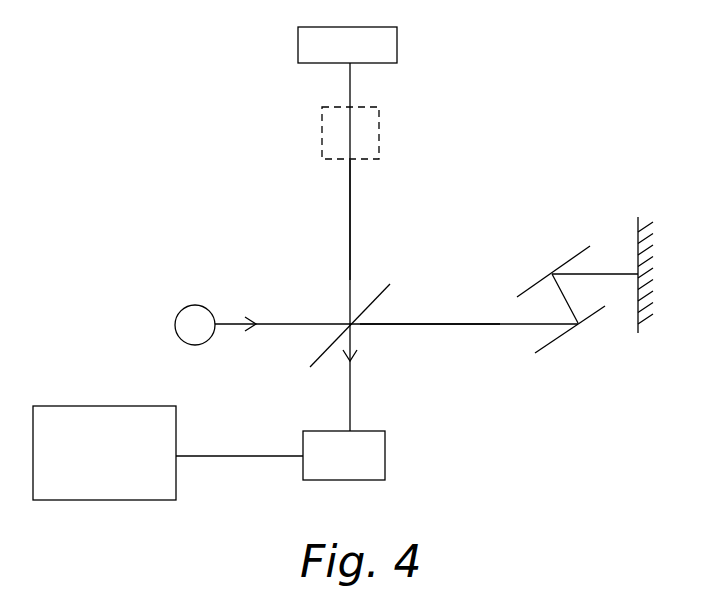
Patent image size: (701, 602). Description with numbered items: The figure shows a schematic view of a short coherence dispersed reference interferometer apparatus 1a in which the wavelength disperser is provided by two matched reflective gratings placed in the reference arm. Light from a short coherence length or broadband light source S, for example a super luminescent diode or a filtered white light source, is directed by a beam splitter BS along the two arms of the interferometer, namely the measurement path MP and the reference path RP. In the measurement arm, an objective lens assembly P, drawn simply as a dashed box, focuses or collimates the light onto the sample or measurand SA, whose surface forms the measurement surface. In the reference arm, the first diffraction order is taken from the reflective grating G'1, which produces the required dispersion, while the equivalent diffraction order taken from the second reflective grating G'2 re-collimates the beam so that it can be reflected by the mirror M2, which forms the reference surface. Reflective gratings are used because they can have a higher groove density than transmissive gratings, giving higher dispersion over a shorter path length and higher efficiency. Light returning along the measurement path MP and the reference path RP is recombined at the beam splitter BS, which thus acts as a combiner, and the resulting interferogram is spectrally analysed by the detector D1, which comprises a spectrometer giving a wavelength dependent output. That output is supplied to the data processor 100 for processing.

The sample SA is at (397, 43).
The objective lens assembly P is at (335, 130).
The measurement path MP is at (352, 213).
The short coherence dispersed reference interferometer apparatus 1a is at (511, 117).
The reflective grating G'2 is at (553, 254).
The mirror M2 is at (636, 265).
The reflective grating G'1 is at (570, 337).
The short coherence length light source S is at (195, 325).
The beam splitter BS is at (327, 335).
The reference path RP is at (393, 325).
The data processor 100 is at (98, 405).
The detector D1 is at (344, 455).